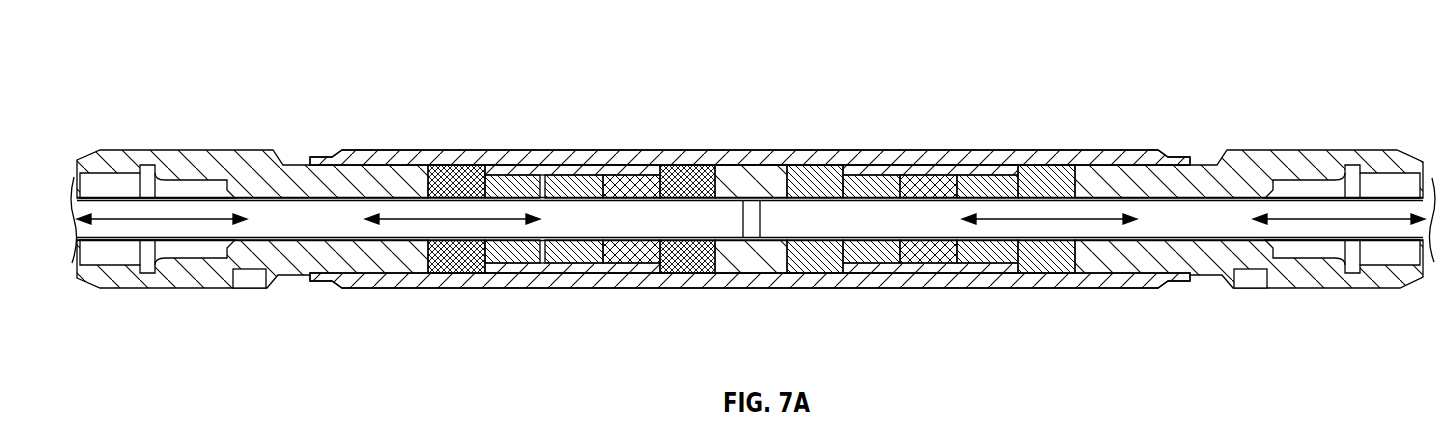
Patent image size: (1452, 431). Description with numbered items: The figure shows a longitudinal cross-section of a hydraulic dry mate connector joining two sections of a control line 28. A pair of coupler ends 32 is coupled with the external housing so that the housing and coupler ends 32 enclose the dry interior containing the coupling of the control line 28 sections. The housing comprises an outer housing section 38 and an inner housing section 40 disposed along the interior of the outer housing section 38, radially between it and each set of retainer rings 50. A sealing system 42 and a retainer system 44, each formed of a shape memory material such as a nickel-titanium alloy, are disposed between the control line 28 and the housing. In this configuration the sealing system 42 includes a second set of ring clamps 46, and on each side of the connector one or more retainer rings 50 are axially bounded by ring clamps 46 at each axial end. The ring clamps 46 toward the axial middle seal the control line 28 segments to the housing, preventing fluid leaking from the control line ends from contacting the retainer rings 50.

The control line 28 is at (107, 241).
The coupler end 32 is at (222, 135).
The outer housing section 38 is at (1044, 158).
The inner housing section 40 is at (953, 170).
The sealing system 42 is at (455, 160).
The retainer system 44 is at (872, 177).
The ring clamp 46 is at (465, 258).
The retainer ring 50 is at (997, 245).